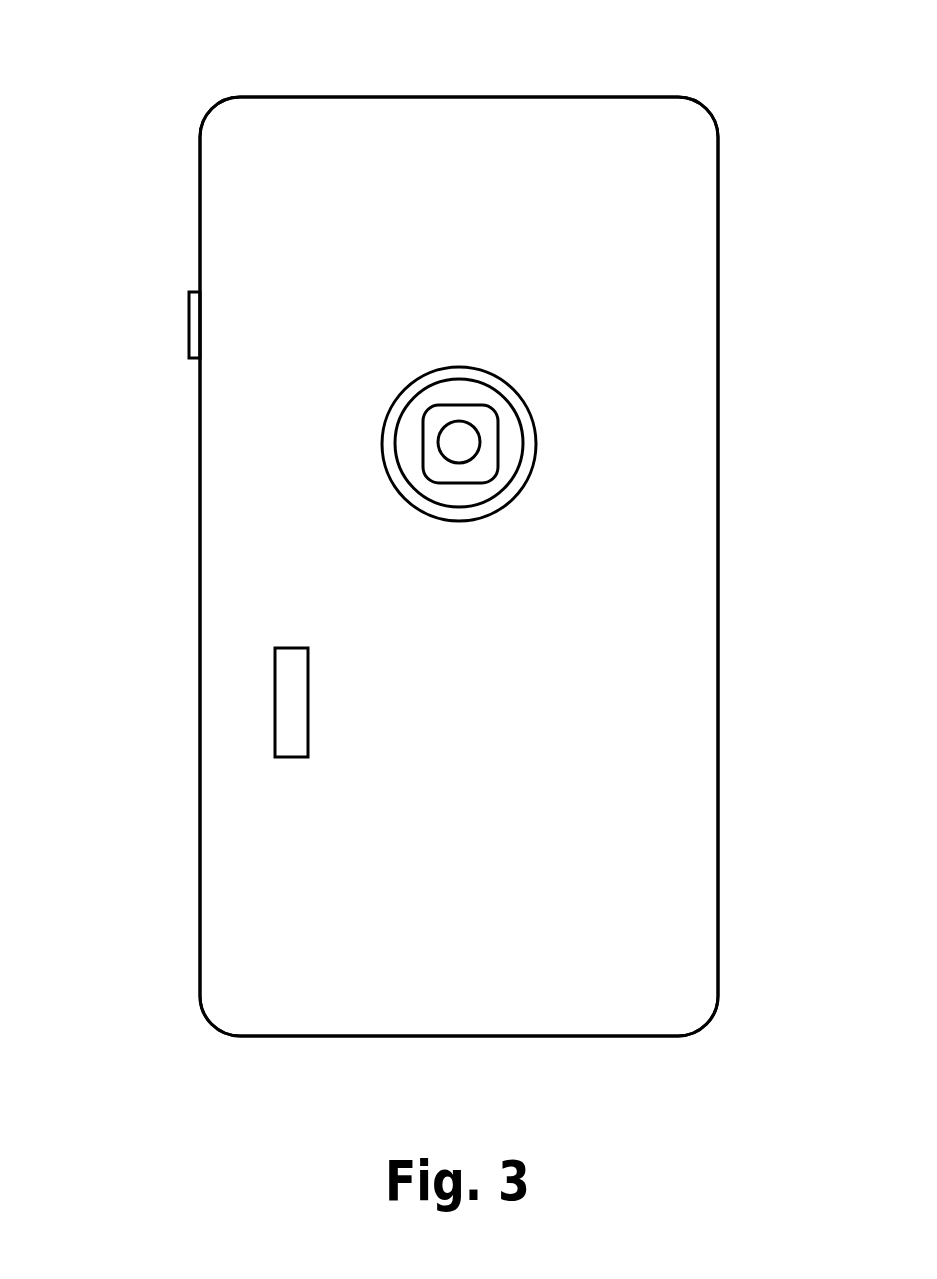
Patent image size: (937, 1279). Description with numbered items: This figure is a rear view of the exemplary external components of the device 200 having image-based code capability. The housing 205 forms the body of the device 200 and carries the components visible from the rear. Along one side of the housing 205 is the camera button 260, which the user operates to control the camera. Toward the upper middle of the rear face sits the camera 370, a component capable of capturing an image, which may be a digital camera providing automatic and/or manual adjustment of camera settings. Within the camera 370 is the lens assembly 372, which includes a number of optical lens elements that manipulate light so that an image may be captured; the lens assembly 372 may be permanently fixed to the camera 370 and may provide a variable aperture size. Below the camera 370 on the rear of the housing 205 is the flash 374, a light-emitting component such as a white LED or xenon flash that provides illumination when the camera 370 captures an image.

The device 200 is at (182, 43).
The housing 205 is at (696, 681).
The camera button 260 is at (189, 332).
The camera 370 is at (507, 468).
The lens assembly 372 is at (480, 443).
The flash 374 is at (275, 700).